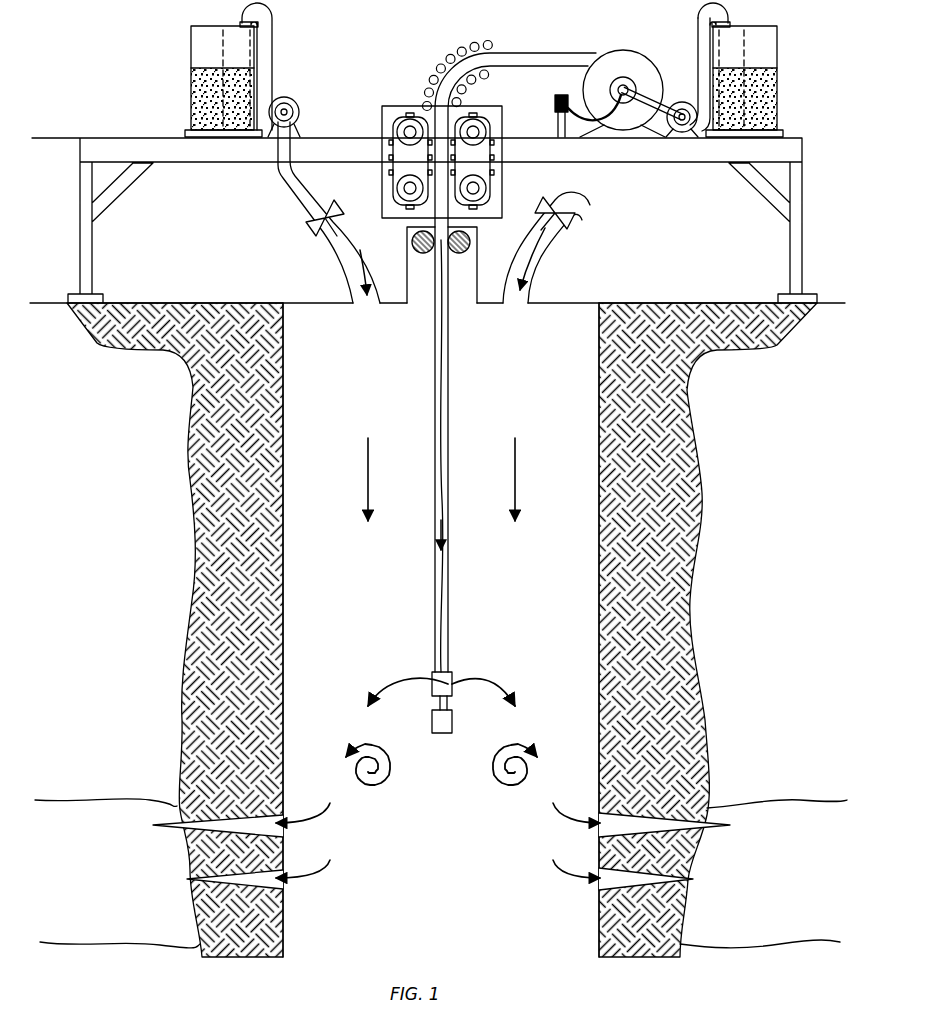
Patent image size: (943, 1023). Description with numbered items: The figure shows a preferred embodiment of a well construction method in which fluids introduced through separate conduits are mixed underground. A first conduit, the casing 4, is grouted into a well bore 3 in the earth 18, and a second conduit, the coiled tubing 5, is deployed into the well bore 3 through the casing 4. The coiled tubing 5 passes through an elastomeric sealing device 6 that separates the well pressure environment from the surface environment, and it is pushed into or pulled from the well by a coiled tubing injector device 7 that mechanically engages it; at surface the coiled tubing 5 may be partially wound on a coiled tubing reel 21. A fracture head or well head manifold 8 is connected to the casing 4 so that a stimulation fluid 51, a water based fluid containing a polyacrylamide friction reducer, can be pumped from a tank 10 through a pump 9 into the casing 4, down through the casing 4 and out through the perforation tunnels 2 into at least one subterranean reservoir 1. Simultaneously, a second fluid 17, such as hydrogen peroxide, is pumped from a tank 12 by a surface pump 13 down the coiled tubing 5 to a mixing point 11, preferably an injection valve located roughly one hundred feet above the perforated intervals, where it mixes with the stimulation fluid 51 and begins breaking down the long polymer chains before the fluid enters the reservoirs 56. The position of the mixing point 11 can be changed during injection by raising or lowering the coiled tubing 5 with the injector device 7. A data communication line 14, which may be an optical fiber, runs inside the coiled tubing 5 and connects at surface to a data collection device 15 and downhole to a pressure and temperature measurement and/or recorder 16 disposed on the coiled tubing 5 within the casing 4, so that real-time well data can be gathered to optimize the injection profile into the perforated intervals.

The subterranean reservoir 1 is at (185, 835).
The perforation tunnels 2 is at (205, 882).
The well bore 3 is at (203, 478).
The casing 4 is at (599, 592).
The coiled tubing 5 is at (522, 55).
The elastomeric sealing device 6 is at (478, 240).
The coiled tubing injector device 7 is at (405, 106).
The well head manifold 8 is at (333, 257).
The pump 9 is at (300, 110).
The tank 10 is at (260, 47).
The mixing point 11 is at (455, 682).
The tank 12 is at (780, 48).
The surface pump 13 is at (680, 133).
The data communication line 14 is at (596, 86).
The data collection device 15 is at (554, 106).
The pressure and temperature measurement and/or recorder 16 is at (452, 720).
The second fluid 17 is at (778, 92).
The earth 18 is at (46, 300).
The coiled tubing reel 21 is at (630, 50).
The stimulation fluid 51 is at (192, 83).
The reservoirs 56 is at (108, 897).